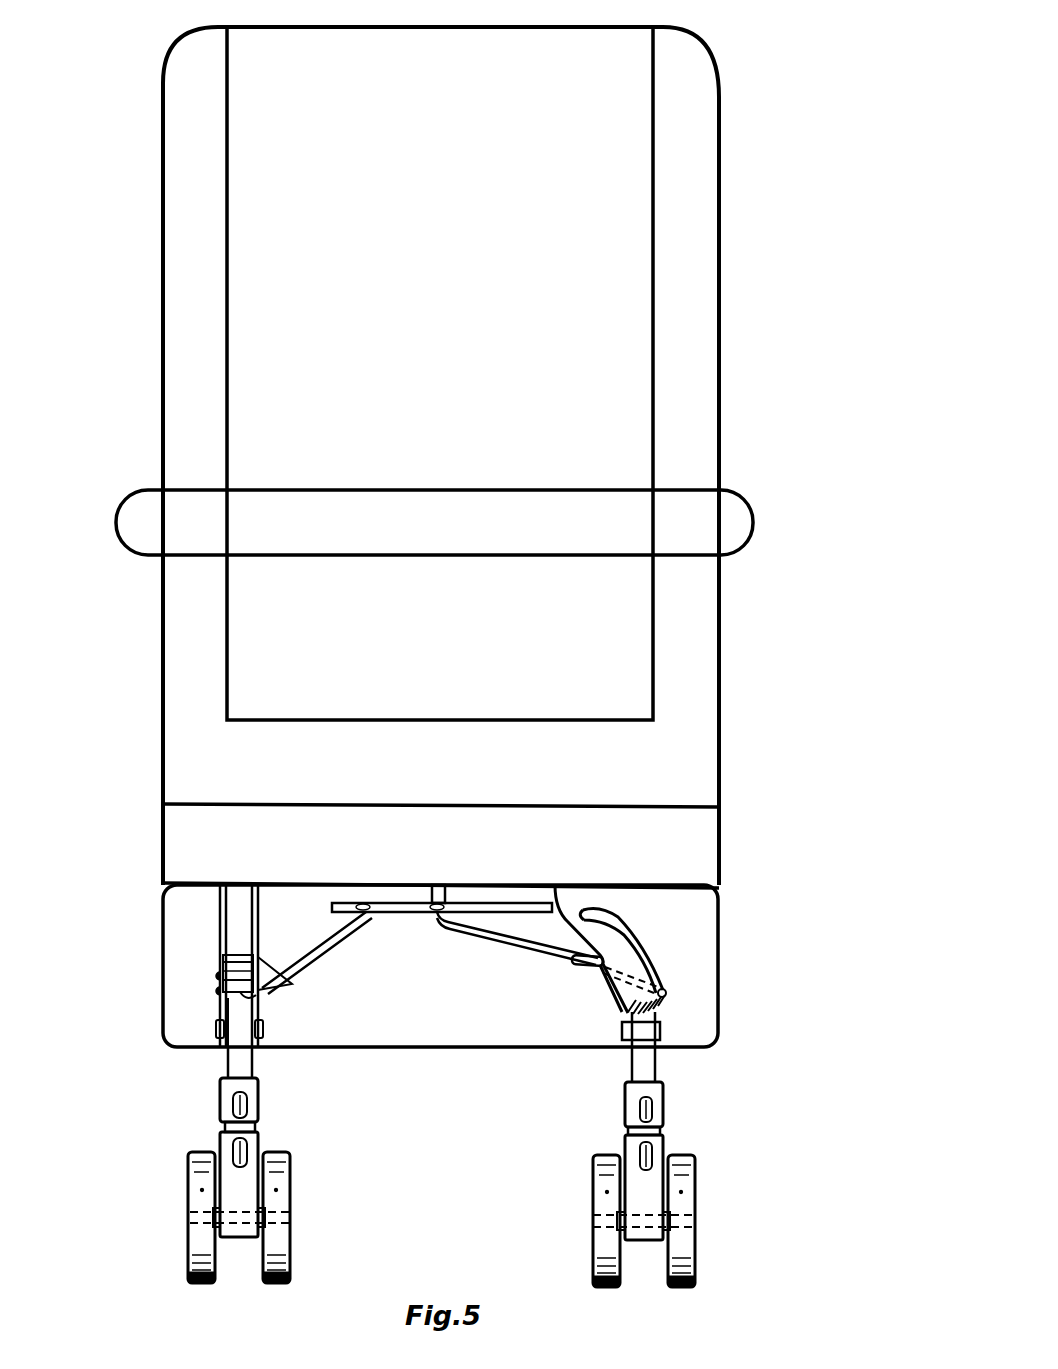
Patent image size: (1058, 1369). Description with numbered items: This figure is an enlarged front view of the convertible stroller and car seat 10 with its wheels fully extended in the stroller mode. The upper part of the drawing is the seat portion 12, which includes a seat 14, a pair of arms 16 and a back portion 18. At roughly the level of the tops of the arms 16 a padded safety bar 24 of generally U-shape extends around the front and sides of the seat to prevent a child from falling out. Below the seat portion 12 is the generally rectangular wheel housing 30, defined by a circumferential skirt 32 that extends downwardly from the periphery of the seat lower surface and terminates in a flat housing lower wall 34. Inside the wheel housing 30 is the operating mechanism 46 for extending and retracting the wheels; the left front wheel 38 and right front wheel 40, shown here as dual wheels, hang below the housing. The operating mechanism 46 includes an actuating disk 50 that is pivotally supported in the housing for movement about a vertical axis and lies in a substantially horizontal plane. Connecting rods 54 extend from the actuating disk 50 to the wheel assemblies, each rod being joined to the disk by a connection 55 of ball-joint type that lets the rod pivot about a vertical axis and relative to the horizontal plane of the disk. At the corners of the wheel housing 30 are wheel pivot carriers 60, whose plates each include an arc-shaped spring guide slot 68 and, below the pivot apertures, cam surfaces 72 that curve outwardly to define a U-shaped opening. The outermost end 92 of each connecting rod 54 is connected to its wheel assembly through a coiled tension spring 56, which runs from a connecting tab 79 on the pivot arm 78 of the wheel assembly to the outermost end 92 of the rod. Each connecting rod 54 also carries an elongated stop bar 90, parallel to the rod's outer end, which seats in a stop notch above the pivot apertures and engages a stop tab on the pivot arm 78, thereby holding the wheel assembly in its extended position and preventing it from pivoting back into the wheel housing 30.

The convertible stroller and car seat 10 is at (479, 643).
The seat portion 12 is at (779, 636).
The seat 14 is at (444, 718).
The arms 16 is at (177, 575).
The back portion 18 is at (238, 183).
The padded safety bar 24 is at (715, 500).
The wheel housing 30 is at (163, 937).
The circumferential skirt 32 is at (163, 1015).
The housing lower wall 34 is at (393, 1052).
The left front wheel 38 is at (685, 1188).
The right front wheel 40 is at (282, 1190).
The operating mechanism 46 is at (331, 879).
The actuating disk 50 is at (400, 905).
The connecting rods 54 is at (342, 935).
The connection 55 is at (447, 903).
The coiled tension spring 56 is at (664, 999).
The wheel pivot carriers 60 is at (218, 900).
The spring guide slot 68 is at (653, 963).
The cam surfaces 72 is at (215, 1028).
The pivot arm 78 is at (617, 993).
The connecting tab 79 is at (625, 1014).
The stop bar 90 is at (238, 955).
The outermost end 92 is at (238, 997).